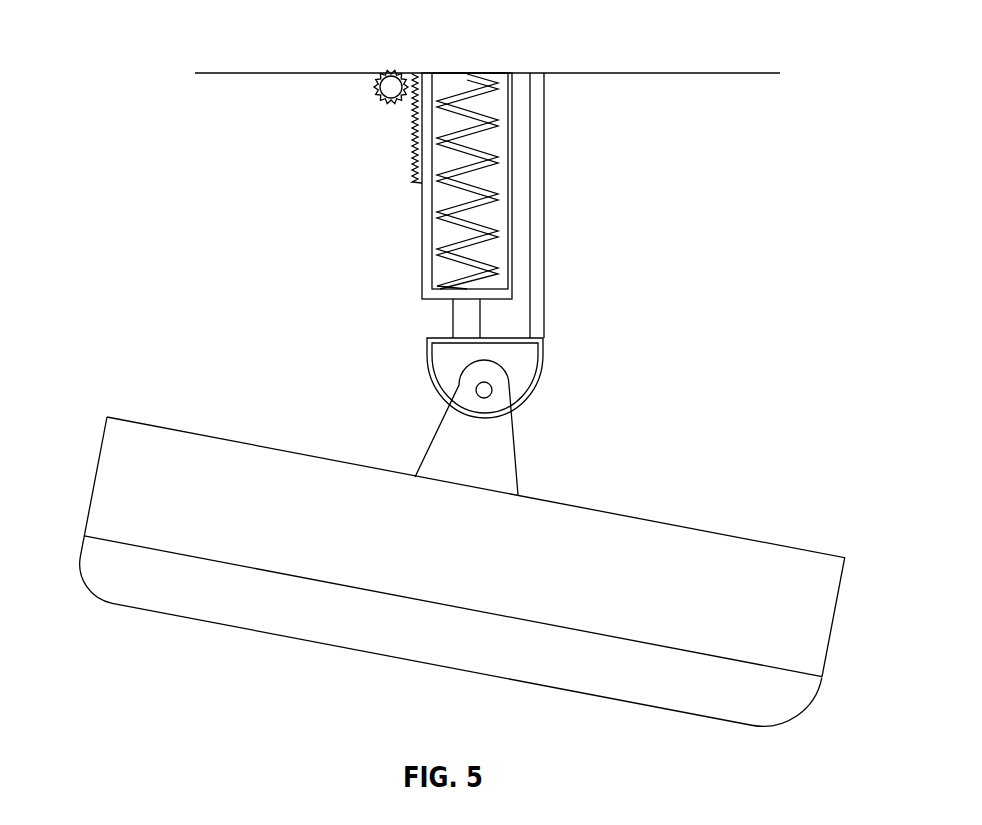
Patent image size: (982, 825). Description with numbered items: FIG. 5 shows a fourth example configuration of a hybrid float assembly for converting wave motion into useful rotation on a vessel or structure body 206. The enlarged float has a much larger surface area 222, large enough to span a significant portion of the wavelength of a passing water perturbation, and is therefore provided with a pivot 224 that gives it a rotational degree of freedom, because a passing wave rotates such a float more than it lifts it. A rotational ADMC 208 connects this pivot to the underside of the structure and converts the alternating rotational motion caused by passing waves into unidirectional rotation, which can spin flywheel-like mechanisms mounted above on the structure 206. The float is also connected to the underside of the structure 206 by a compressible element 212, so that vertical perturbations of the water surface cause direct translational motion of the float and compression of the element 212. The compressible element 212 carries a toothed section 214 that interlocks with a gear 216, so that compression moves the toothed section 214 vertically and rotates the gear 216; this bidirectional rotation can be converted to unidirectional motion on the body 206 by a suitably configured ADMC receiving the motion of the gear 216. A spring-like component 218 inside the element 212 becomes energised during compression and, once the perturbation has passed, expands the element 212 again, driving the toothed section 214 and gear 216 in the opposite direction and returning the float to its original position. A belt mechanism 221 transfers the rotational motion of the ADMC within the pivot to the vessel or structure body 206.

The vessel or structure body 206 is at (282, 52).
The gear 216 is at (385, 83).
The toothed section 214 is at (413, 142).
The compressible element 212 is at (422, 300).
The spring-like component 218 is at (437, 213).
The belt mechanism 221 is at (545, 198).
The rotational ADMC 208 is at (520, 348).
The pivot 224 is at (489, 397).
The surface area 222 is at (425, 563).